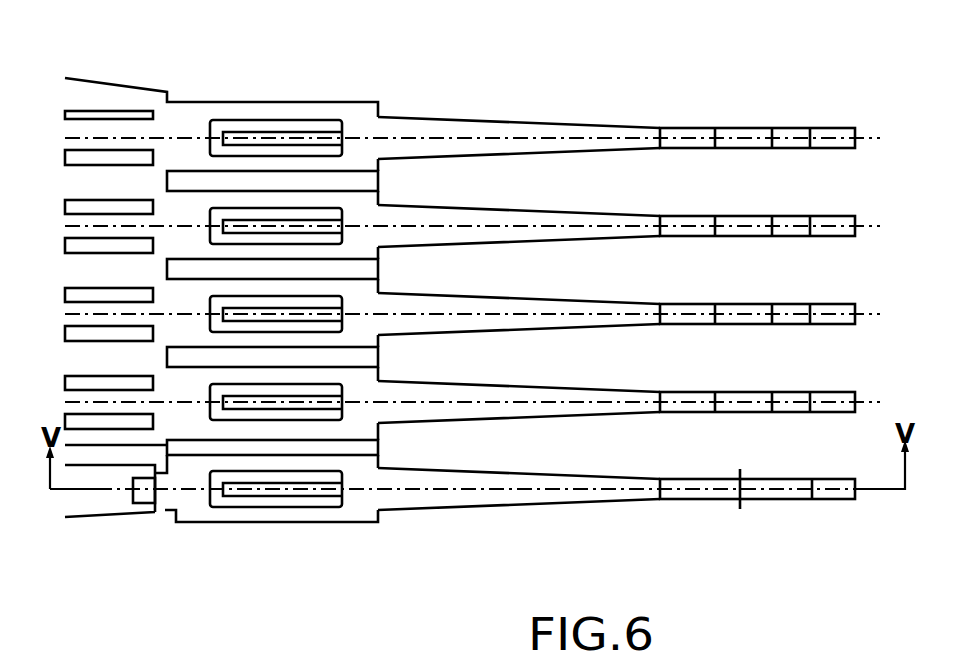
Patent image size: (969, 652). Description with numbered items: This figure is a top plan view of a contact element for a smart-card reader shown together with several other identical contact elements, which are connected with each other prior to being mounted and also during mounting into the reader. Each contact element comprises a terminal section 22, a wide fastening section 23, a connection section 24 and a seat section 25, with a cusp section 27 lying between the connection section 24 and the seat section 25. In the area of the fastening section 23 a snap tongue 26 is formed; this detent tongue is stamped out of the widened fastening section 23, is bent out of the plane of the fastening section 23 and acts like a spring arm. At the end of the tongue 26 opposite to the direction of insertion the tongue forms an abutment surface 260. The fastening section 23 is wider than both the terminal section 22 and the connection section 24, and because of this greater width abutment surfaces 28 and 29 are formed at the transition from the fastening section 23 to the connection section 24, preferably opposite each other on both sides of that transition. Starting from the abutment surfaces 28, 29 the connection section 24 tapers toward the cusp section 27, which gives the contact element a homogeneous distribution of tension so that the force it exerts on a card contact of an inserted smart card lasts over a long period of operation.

The terminal section 22 is at (188, 130).
The fastening section 23 is at (232, 112).
The connection section 24 is at (577, 123).
The seat section 25 is at (836, 127).
The snap tongue 26 is at (293, 137).
The cusp section 27 is at (745, 127).
The abutment surface 28 is at (380, 108).
The abutment surface 29 is at (380, 163).
The abutment surface 260 is at (210, 318).